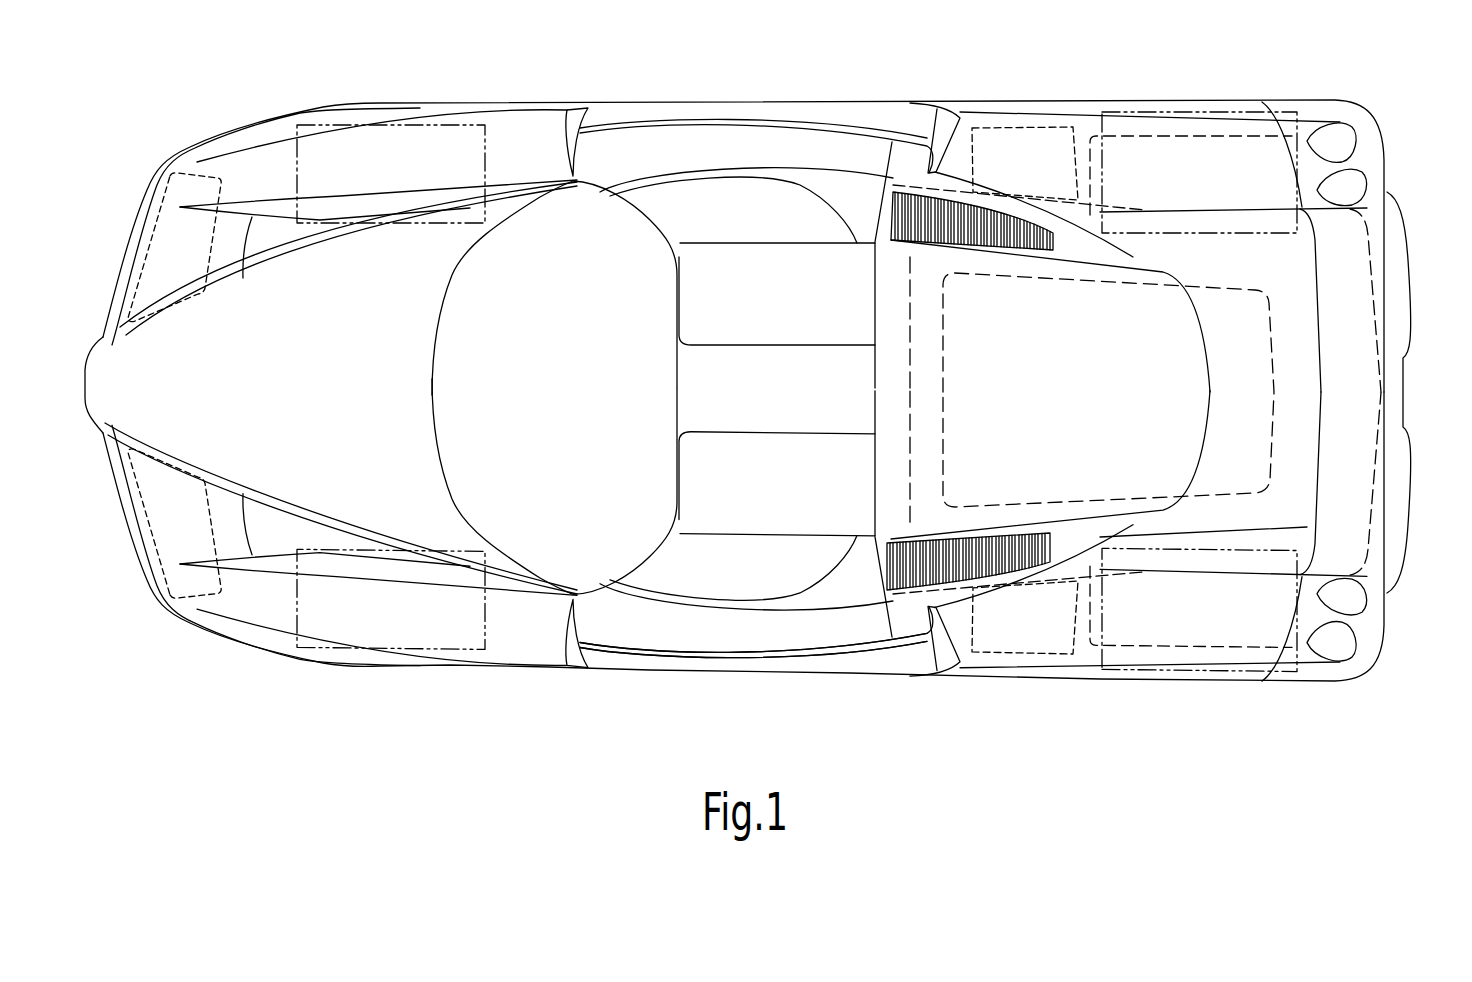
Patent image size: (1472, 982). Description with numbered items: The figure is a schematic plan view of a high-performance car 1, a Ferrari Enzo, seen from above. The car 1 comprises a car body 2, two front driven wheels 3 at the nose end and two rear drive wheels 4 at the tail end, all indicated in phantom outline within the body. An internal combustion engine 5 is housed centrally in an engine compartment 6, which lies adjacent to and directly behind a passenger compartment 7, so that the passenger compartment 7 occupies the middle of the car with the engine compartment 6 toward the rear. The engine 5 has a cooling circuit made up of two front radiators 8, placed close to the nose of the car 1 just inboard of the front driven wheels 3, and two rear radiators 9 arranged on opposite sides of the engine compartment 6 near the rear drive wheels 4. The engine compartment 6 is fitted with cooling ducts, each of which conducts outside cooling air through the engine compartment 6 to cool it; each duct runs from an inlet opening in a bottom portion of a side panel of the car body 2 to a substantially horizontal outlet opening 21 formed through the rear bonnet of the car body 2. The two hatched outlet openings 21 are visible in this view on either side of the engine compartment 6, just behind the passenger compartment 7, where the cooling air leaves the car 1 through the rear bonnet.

The car 1 is at (468, 748).
The car body 2 is at (840, 709).
The front driven wheels 3 is at (399, 148).
The rear drive wheels 4 is at (1197, 128).
The internal combustion engine 5 is at (1262, 400).
The engine compartment 6 is at (1088, 250).
The passenger compartment 7 is at (680, 689).
The front radiators 8 is at (172, 222).
The rear radiators 9 is at (1020, 148).
The outlet opening 21 is at (910, 252).